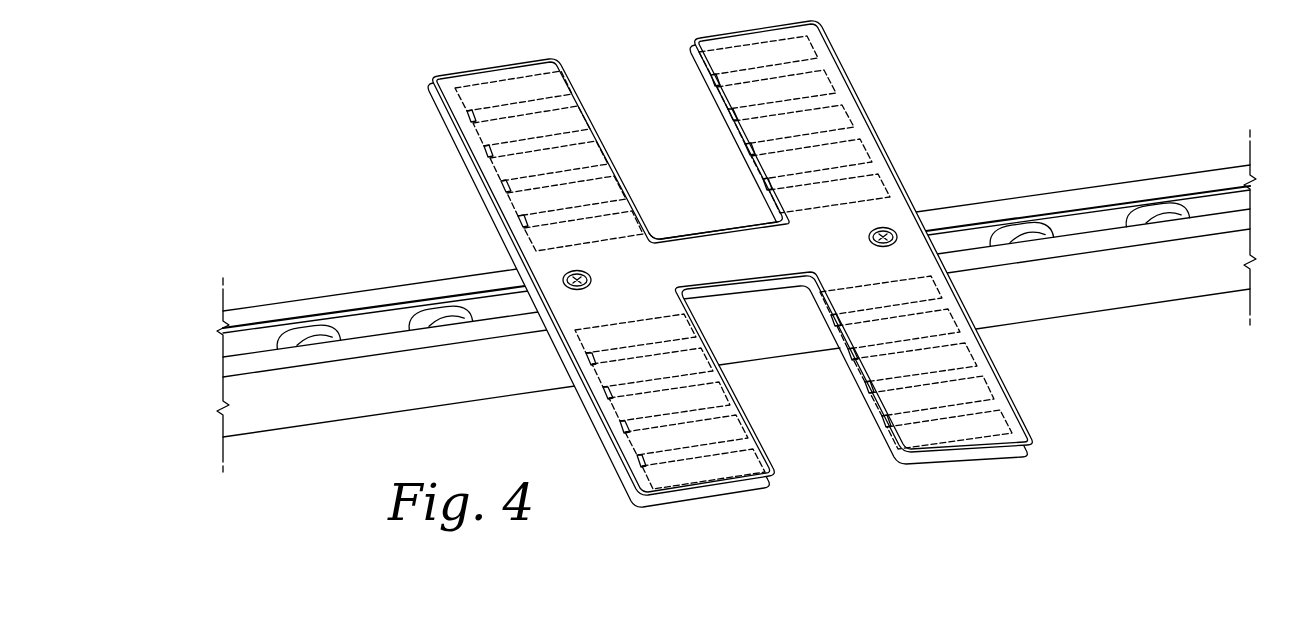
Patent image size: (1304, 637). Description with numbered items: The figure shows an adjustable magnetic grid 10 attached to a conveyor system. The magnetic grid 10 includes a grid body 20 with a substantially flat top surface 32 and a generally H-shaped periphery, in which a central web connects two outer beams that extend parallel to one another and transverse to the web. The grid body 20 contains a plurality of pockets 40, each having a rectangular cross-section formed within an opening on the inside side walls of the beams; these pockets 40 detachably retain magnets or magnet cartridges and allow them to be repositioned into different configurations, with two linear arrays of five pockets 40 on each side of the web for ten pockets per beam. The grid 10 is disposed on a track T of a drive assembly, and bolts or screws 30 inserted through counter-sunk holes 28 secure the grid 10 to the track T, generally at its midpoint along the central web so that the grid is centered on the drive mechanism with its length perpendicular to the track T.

The magnetic grid 10 is at (368, 94).
The grid body 20 is at (875, 103).
The counter-sunk holes 28 is at (568, 260).
The bolts or screws 30 is at (890, 216).
The top surface 32 is at (829, 257).
The pocket 40 is at (846, 380).
The track T is at (1082, 175).